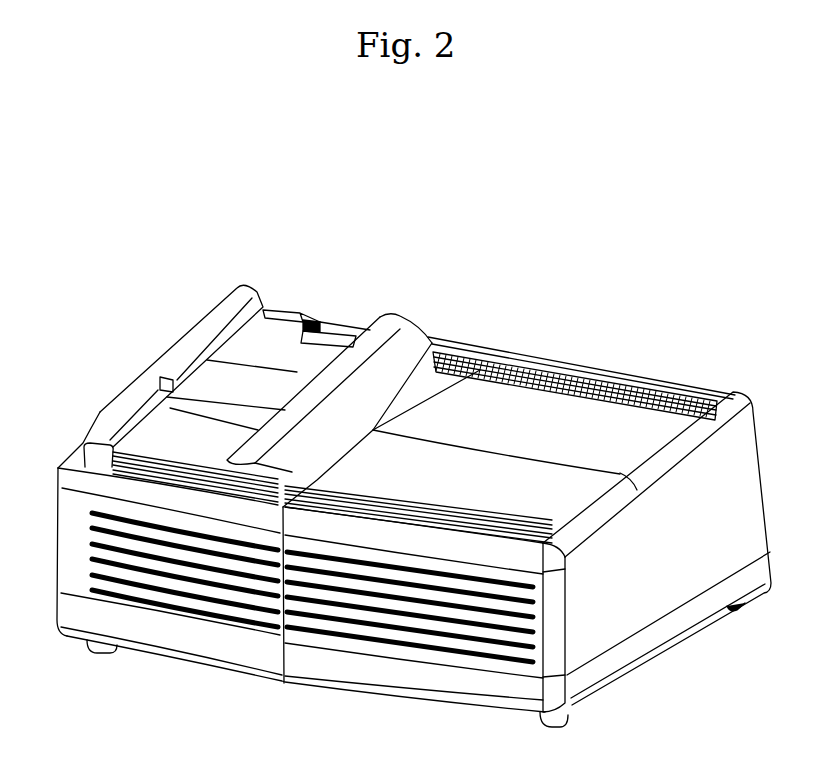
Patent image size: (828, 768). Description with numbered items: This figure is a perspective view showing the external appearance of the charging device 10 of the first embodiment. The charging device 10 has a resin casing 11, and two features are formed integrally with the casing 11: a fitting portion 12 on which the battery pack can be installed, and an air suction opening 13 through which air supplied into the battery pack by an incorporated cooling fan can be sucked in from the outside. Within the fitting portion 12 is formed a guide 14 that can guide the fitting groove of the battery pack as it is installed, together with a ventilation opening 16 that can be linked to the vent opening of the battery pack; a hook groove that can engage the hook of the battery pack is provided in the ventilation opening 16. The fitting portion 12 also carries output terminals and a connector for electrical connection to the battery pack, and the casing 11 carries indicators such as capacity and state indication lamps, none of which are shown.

The charging device 10 is at (592, 322).
The casing 11 is at (447, 343).
The fitting portion 12 is at (273, 343).
The air suction opening 13 is at (205, 608).
The guide 14 is at (227, 363).
The ventilation opening 16 is at (332, 338).